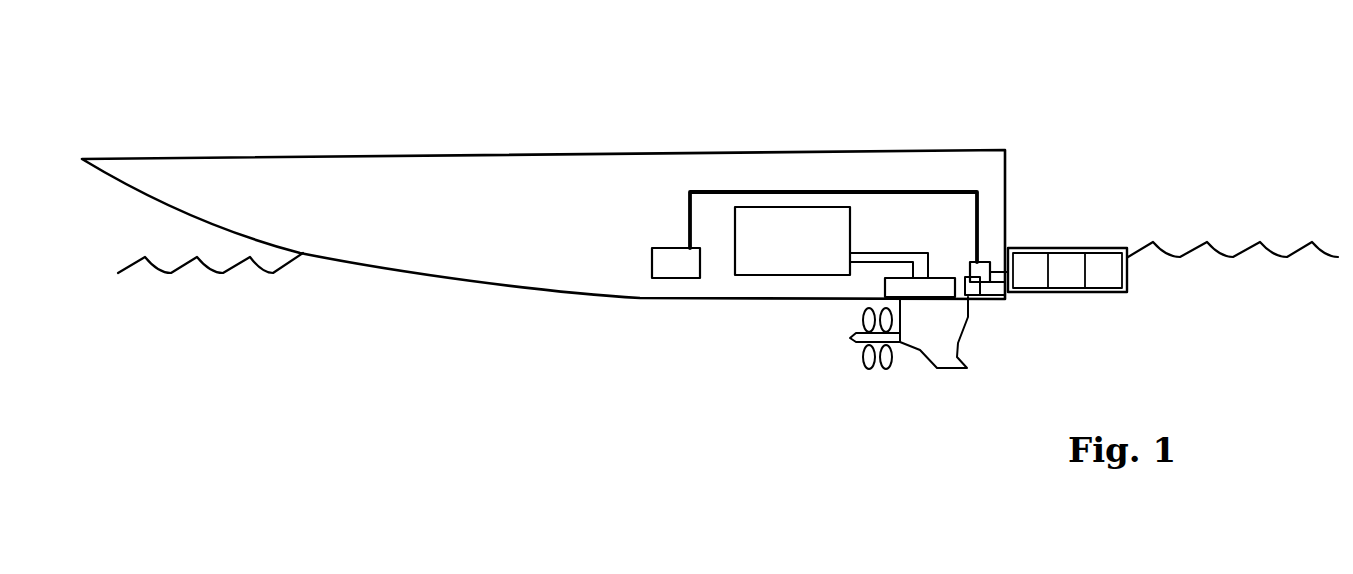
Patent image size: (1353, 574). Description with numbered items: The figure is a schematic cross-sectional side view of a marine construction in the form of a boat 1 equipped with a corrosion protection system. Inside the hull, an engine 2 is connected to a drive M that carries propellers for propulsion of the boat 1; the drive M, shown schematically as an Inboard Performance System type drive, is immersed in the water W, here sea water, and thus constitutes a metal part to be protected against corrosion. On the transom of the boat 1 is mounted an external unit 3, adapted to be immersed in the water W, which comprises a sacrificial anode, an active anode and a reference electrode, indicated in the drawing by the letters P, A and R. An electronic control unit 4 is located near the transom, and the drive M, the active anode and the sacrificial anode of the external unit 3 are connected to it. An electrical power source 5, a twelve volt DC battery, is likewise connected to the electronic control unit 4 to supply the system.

The boat 1 is at (560, 110).
The engine 2 is at (792, 241).
The external unit 3 is at (1035, 248).
The electronic control unit 4 is at (985, 296).
The electrical power source 5 is at (652, 258).
The drive M is at (945, 368).
The water W is at (1230, 257).